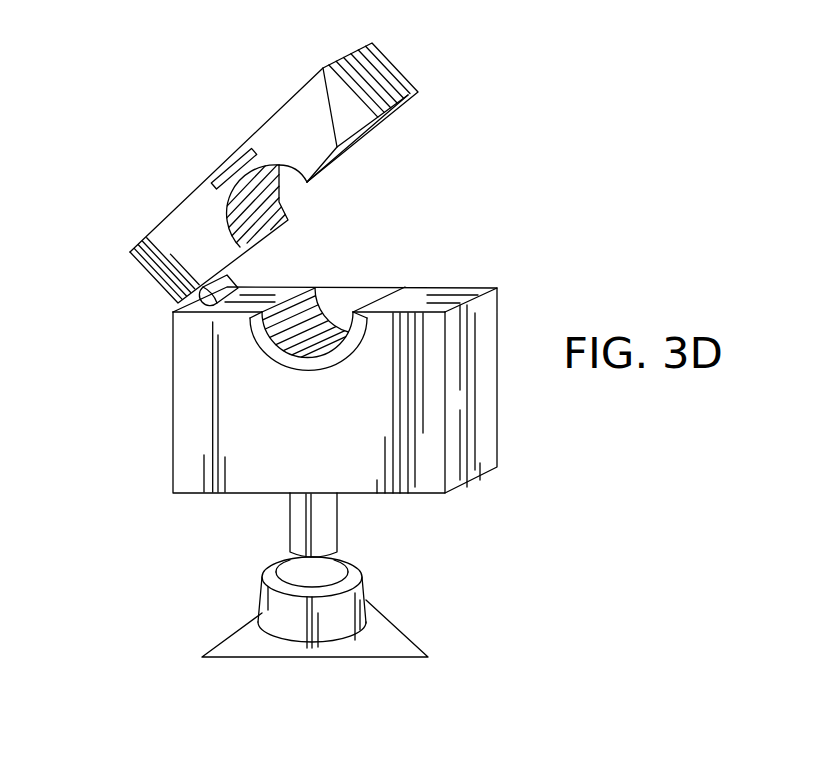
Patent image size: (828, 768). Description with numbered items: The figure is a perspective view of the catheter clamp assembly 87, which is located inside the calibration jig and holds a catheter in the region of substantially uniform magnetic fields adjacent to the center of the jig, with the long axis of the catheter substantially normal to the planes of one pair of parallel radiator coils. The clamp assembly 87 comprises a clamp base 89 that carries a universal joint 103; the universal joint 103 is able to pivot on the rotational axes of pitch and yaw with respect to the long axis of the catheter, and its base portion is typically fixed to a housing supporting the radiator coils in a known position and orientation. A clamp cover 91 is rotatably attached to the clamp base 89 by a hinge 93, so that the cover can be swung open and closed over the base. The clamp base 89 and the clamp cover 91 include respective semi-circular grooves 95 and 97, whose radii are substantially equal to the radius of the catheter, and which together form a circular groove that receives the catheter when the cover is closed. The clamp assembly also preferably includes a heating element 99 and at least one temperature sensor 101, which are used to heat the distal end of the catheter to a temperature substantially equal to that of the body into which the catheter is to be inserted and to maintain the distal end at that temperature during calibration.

The catheter clamp assembly 87 is at (120, 410).
The clamp base 89 is at (174, 446).
The clamp cover 91 is at (152, 240).
The hinge 93 is at (185, 333).
The semi-circular groove 95 is at (320, 290).
The semi-circular groove 97 is at (281, 200).
The heating element 99 is at (330, 369).
The temperature sensor 101 is at (219, 175).
The universal joint 103 is at (358, 590).